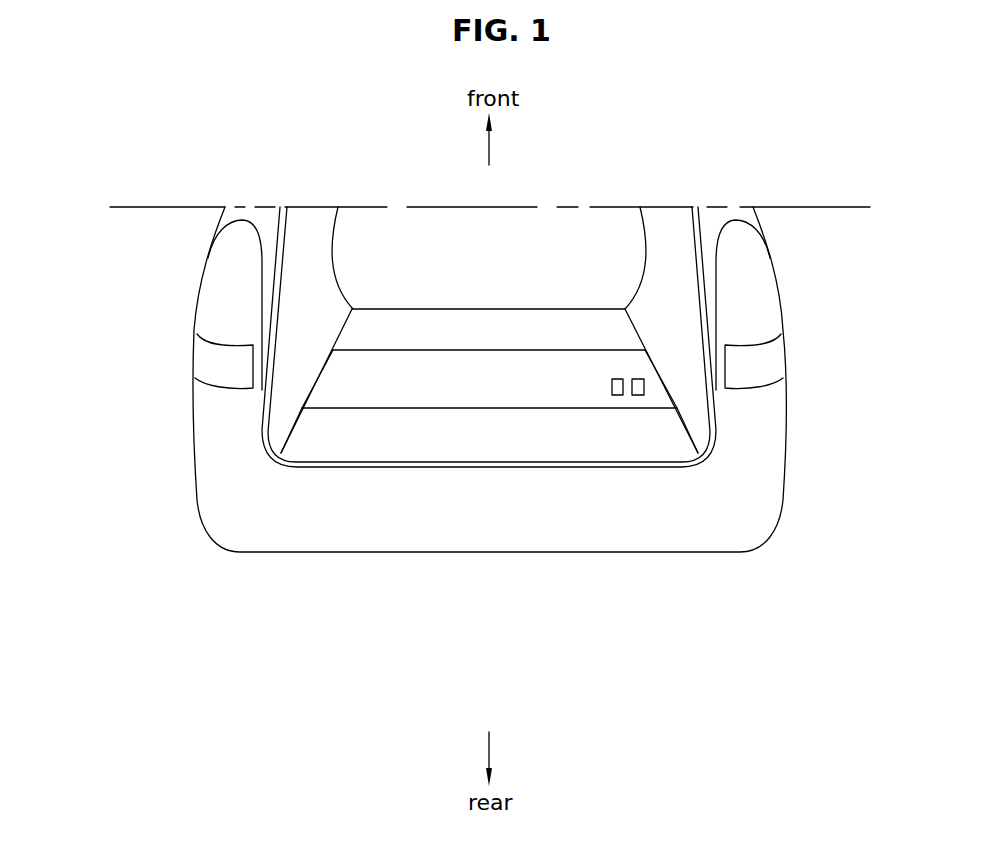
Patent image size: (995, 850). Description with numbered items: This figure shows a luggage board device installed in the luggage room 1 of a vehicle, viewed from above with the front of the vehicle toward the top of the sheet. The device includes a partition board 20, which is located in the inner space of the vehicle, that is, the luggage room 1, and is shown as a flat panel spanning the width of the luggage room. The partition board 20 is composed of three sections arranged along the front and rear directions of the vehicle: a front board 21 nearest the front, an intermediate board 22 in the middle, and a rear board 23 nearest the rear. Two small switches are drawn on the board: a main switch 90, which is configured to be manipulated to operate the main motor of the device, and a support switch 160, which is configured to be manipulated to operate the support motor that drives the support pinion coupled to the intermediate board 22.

The luggage room 1 is at (389, 259).
The partition board 20 is at (312, 437).
The front board 21 is at (548, 335).
The intermediate board 22 is at (388, 375).
The rear board 23 is at (510, 430).
The main switch 90 is at (616, 396).
The support switch 160 is at (640, 387).